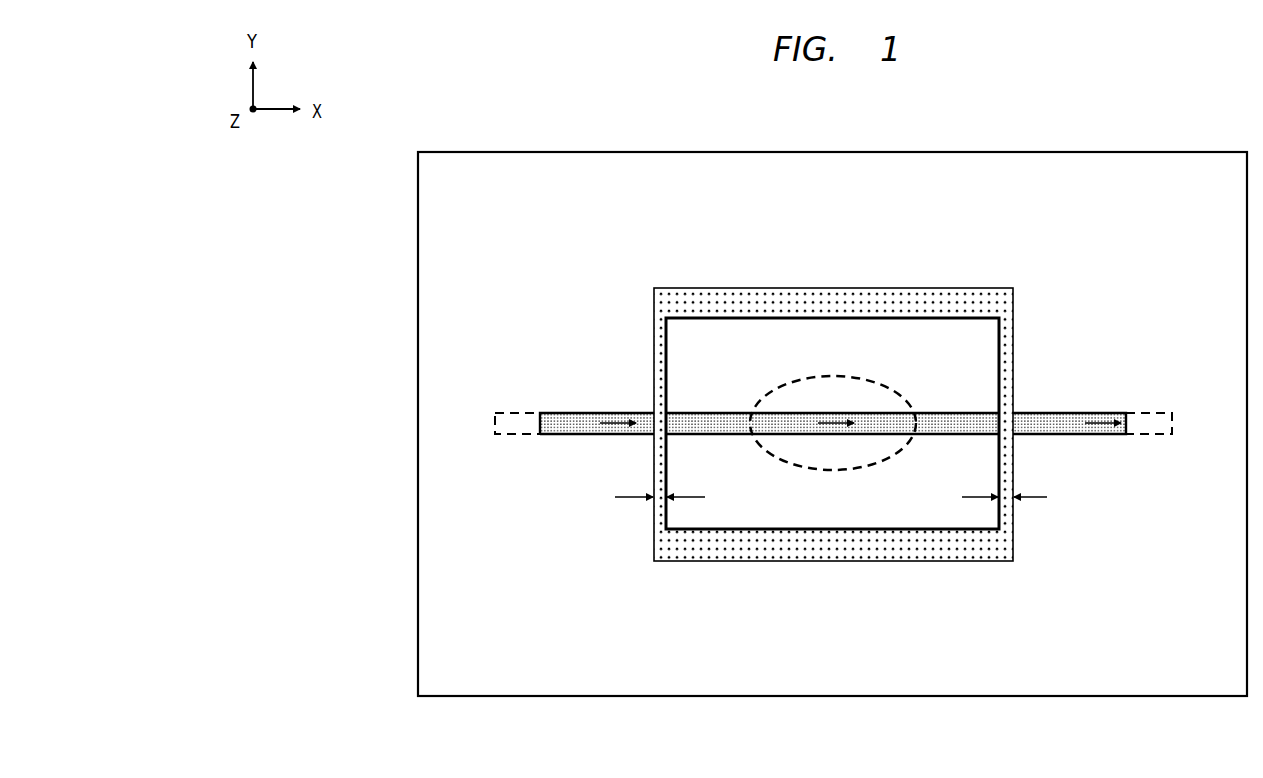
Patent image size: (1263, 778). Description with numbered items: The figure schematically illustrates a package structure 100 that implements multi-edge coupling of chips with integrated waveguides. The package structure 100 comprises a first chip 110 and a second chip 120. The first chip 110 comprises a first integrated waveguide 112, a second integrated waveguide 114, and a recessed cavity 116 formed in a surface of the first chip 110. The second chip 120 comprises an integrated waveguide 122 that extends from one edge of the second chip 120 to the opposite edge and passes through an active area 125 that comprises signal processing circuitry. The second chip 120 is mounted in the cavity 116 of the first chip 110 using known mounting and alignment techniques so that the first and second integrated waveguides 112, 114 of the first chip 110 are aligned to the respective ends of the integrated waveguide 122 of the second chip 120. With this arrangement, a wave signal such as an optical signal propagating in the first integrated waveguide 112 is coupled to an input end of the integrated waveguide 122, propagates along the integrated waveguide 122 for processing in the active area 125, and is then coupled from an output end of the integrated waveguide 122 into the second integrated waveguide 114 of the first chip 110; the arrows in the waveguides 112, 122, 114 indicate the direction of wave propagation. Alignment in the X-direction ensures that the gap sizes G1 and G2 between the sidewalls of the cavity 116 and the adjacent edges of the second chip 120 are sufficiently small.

The package structure 100 is at (847, 103).
The first chip 110 is at (1138, 152).
The first integrated waveguide 112 is at (578, 413).
The second integrated waveguide 114 is at (1060, 413).
The recessed cavity 116 is at (870, 297).
The second chip 120 is at (773, 335).
The integrated waveguide 122 is at (714, 413).
The active area 125 is at (876, 382).
The gap size G1 is at (648, 497).
The gap size G2 is at (1021, 497).